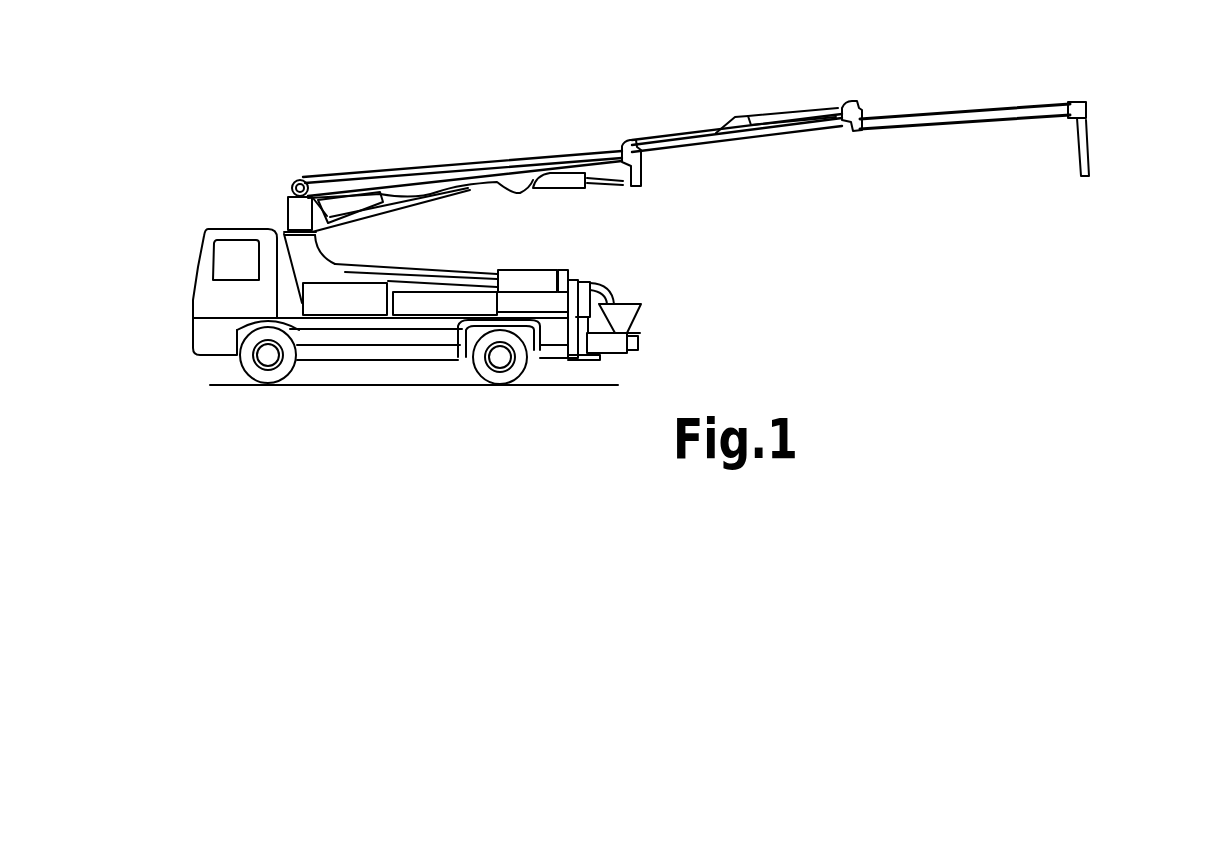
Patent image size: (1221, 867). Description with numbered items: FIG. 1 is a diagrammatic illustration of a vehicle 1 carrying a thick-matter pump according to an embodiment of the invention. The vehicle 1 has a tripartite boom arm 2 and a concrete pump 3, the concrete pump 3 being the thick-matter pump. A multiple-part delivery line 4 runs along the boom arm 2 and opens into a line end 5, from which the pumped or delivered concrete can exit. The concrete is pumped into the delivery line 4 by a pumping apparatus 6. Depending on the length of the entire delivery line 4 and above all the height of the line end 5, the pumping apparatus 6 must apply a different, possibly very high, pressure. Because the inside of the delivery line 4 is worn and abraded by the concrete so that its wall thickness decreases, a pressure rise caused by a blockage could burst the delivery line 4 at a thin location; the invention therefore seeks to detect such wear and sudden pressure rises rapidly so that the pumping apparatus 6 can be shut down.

The truck-mounted concrete pump 1 is at (377, 423).
The boom arm 2 is at (427, 167).
The concrete pump 3 is at (660, 218).
The delivery line 4 is at (378, 180).
The line end 5 is at (1088, 172).
The pumping apparatus 6 is at (622, 304).